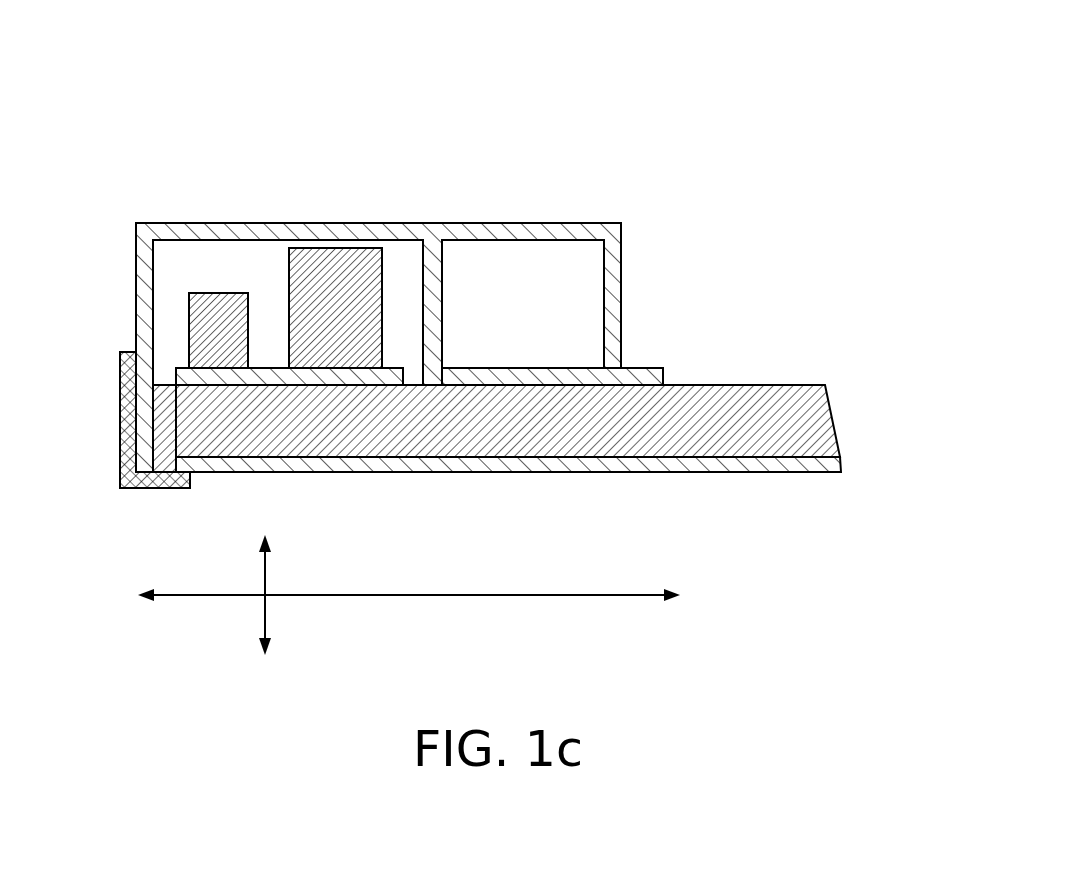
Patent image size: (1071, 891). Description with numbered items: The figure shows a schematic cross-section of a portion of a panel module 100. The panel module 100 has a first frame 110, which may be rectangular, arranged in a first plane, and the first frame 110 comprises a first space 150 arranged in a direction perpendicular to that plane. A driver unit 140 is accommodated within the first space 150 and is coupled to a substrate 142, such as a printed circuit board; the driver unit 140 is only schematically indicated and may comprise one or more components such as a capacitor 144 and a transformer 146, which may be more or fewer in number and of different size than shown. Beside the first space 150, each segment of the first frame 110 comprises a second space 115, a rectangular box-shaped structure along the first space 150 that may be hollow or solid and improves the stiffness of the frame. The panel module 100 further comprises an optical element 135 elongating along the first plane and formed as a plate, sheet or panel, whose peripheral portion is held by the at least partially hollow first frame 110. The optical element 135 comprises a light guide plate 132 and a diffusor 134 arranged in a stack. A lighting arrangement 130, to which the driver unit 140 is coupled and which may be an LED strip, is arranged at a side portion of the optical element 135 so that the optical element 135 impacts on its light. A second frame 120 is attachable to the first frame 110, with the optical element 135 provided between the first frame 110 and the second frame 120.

The panel module 100 is at (760, 72).
The first frame 110 is at (157, 232).
The second space 115 is at (583, 250).
The second frame 120 is at (128, 398).
The lighting arrangement 130 is at (165, 443).
The light guide plate 132 is at (760, 407).
The diffusor 134 is at (760, 472).
The optical element 135 is at (853, 378).
The driver unit 140 is at (188, 201).
The substrate 142 is at (393, 368).
The capacitor 144 is at (205, 323).
The transformer 146 is at (378, 285).
The first space 150 is at (407, 250).